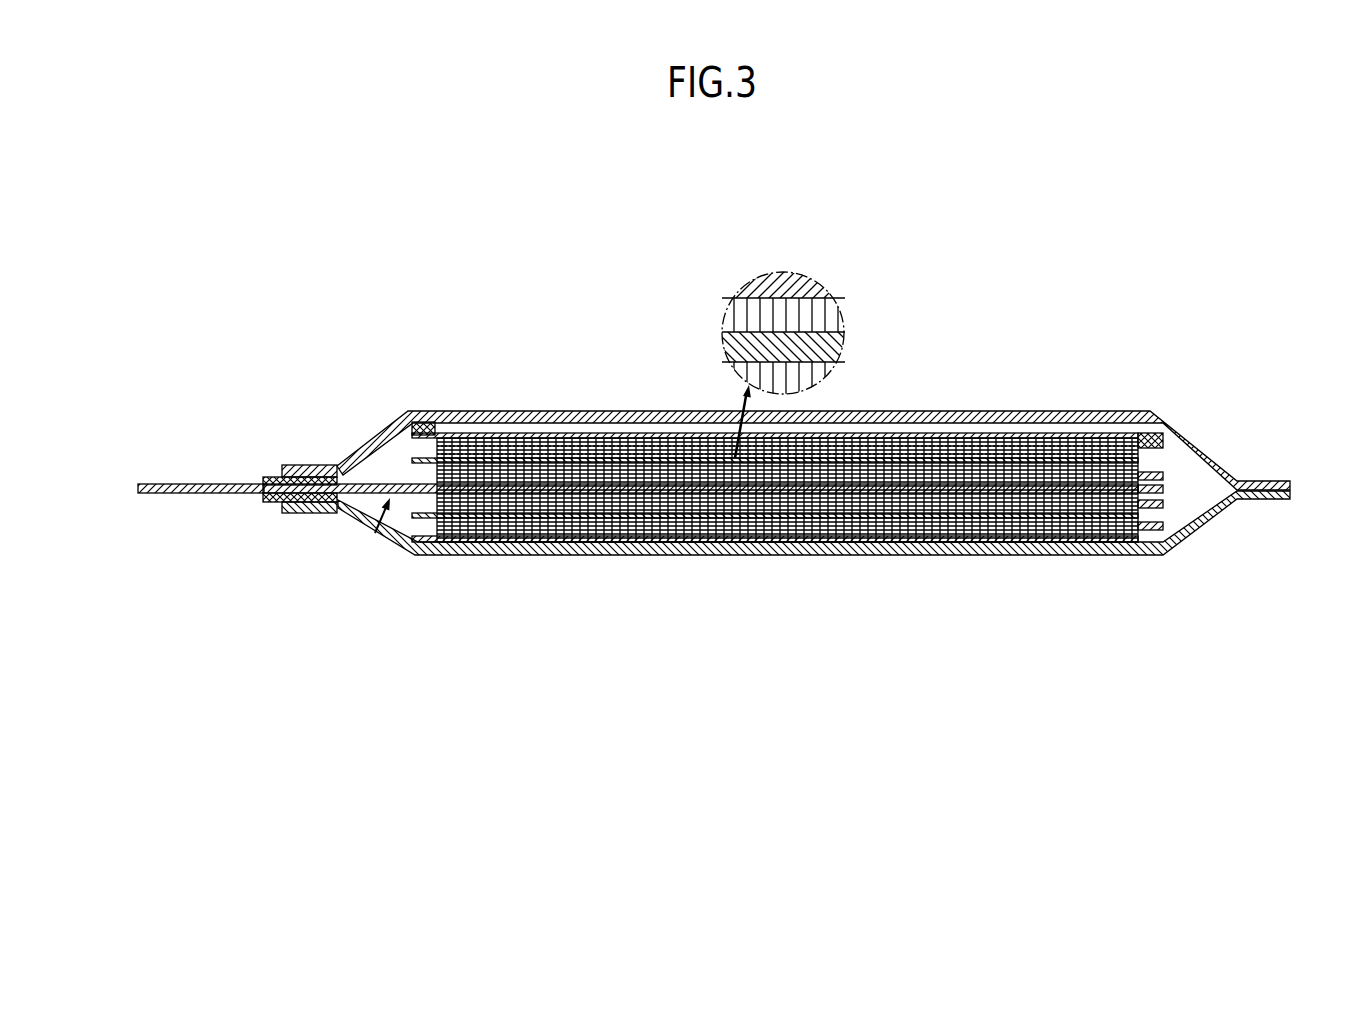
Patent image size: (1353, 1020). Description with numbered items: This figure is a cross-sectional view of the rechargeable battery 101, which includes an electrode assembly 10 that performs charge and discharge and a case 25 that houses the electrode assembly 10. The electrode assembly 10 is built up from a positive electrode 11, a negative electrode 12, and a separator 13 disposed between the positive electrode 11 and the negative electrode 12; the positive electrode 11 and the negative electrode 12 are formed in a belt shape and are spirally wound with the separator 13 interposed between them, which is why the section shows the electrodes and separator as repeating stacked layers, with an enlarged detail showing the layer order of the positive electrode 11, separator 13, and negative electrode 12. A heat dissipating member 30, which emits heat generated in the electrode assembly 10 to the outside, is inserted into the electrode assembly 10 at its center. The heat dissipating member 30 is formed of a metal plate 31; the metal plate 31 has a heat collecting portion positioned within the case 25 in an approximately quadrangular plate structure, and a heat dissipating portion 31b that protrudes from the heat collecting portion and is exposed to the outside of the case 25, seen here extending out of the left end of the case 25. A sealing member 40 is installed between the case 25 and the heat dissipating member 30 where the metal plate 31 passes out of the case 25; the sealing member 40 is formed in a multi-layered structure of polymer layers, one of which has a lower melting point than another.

The rechargeable battery 101 is at (731, 156).
The electrode assembly 10 is at (600, 361).
The positive electrode 11 is at (505, 437).
The negative electrode 12 is at (577, 452).
The separator 13 is at (540, 446).
The case 25 is at (1063, 411).
The heat dissipating member 30 is at (375, 535).
The metal plate 31 is at (720, 494).
The heat dissipating portion 31b is at (158, 484).
The sealing member 40 is at (292, 514).